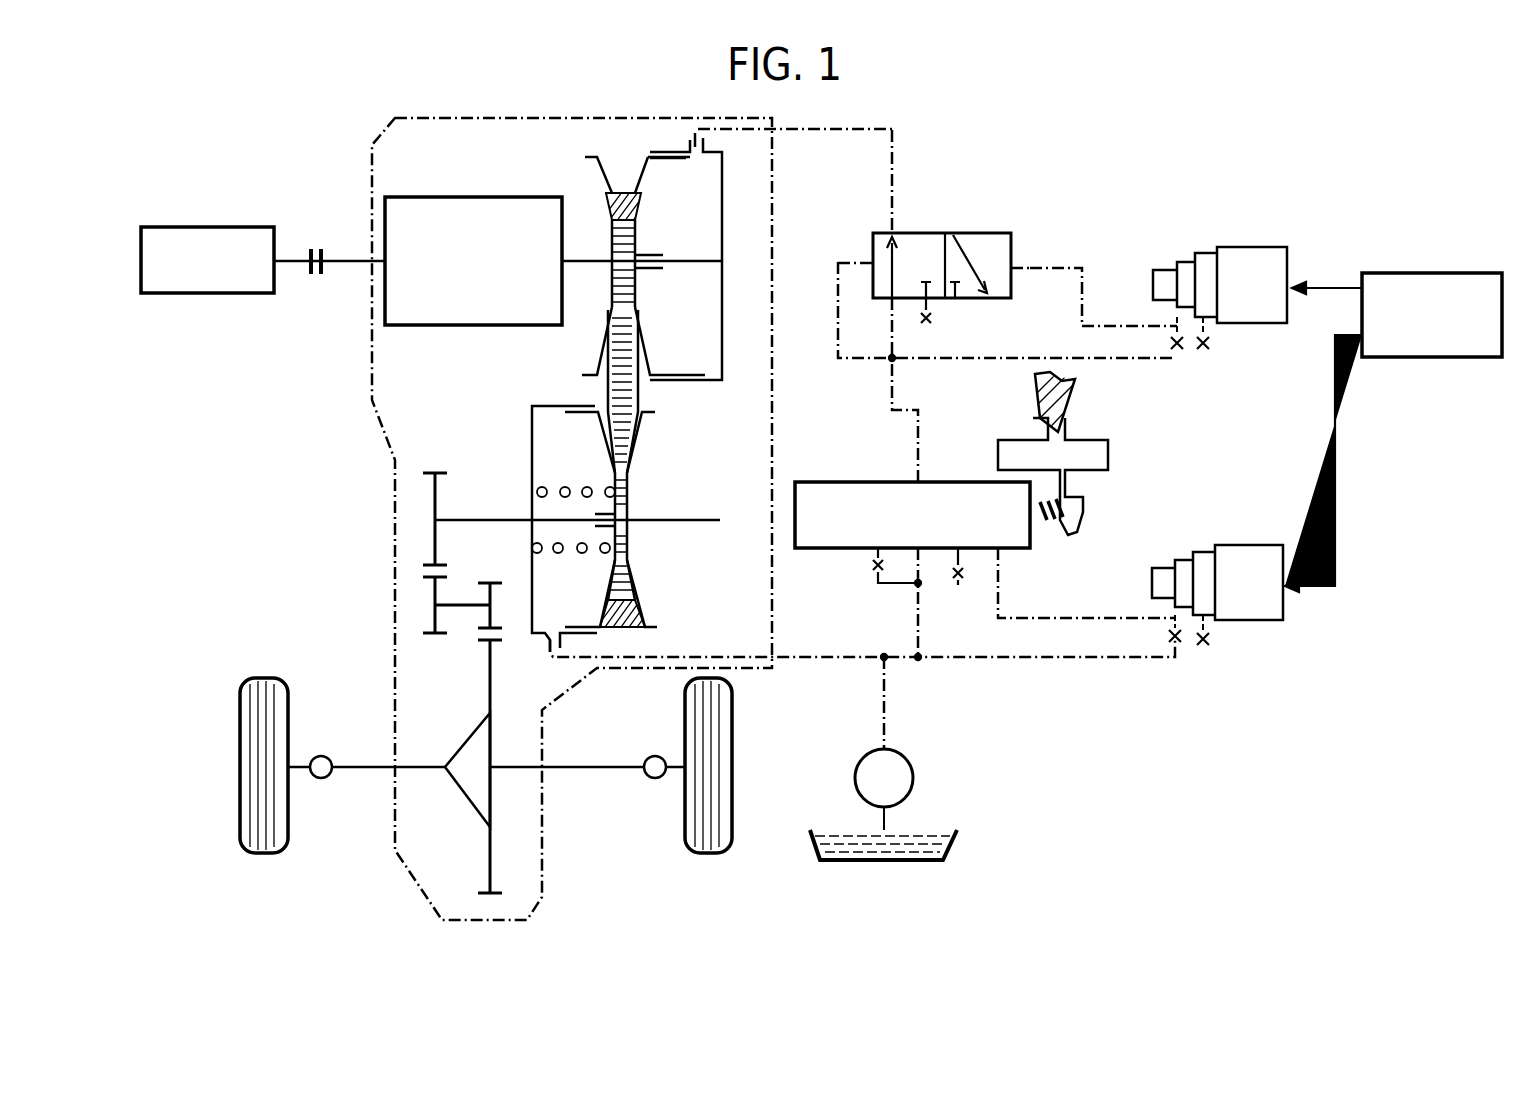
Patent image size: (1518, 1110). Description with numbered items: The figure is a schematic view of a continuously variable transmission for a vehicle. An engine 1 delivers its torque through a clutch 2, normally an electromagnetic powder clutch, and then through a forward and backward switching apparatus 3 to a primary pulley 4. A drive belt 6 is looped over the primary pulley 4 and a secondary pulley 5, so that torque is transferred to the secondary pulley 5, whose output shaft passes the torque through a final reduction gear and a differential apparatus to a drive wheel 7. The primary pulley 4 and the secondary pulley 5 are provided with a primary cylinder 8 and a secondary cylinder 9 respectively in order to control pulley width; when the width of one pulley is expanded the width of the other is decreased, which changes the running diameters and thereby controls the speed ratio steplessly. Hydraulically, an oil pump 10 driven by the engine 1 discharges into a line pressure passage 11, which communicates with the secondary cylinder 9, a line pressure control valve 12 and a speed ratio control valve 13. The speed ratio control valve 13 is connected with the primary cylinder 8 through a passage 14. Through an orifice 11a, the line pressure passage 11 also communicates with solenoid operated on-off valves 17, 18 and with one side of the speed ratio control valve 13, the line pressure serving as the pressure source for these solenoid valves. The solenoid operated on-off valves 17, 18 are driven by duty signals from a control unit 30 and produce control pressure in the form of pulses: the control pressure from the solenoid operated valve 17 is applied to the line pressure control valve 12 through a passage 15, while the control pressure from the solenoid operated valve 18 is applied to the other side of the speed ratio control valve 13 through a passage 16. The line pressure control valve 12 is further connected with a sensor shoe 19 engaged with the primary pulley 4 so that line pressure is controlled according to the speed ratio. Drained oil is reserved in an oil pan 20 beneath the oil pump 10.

The engine 1 is at (205, 226).
The clutch 2 is at (312, 282).
The forward and backward switching apparatus 3 is at (445, 196).
The primary pulley 4 is at (603, 190).
The secondary pulley 5 is at (637, 597).
The drive belt 6 is at (632, 388).
The drive wheel 7 is at (290, 712).
The primary cylinder 8 is at (695, 325).
The secondary cylinder 9 is at (543, 445).
The oil pump 10 is at (908, 765).
The line pressure passage 11 is at (893, 365).
The orifice 11a is at (1190, 345).
The line pressure control valve 12 is at (859, 481).
The speed ratio control valve 13 is at (925, 232).
The passage 14 is at (895, 163).
The passage 15 is at (1057, 618).
The passage 16 is at (1082, 282).
The solenoid operated on-off valve 17 is at (1248, 545).
The solenoid operated on-off valve 18 is at (1252, 248).
The sensor shoe 19 is at (1085, 500).
The oil pan 20 is at (950, 840).
The control unit 30 is at (1420, 273).